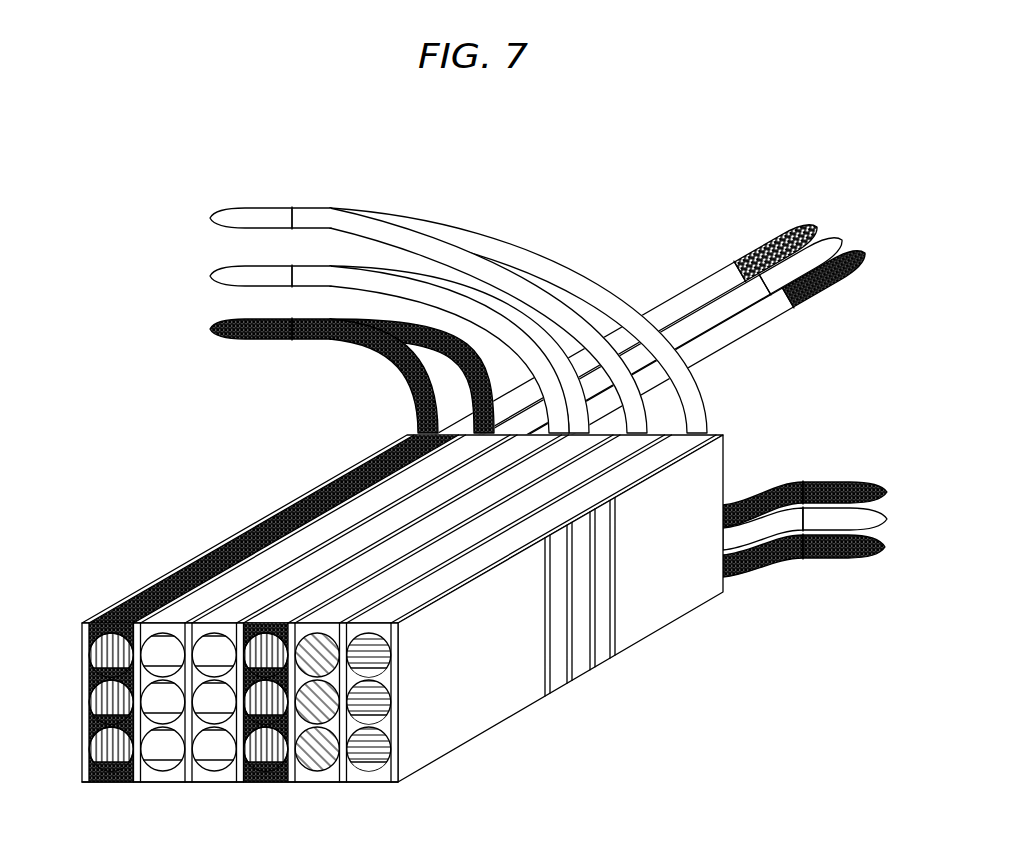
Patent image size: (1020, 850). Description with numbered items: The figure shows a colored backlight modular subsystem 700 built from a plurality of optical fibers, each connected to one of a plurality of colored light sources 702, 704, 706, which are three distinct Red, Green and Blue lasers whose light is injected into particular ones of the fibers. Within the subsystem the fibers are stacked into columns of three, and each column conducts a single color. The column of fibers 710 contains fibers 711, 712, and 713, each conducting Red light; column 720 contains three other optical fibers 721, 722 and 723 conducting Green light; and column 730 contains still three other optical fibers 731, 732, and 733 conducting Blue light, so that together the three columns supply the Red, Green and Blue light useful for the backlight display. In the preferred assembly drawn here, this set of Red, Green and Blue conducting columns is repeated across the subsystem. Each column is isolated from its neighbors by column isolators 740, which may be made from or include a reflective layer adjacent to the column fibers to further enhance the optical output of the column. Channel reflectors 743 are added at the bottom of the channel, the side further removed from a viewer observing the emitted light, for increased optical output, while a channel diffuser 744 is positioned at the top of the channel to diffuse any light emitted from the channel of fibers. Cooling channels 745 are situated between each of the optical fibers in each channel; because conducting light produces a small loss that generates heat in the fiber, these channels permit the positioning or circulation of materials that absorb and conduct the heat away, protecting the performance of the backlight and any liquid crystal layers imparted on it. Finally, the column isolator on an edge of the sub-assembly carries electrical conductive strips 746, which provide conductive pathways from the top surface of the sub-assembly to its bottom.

The modular subsystem 700 is at (375, 633).
The light source 702 is at (212, 218).
The light source 704 is at (212, 276).
The light source 706 is at (212, 329).
The column of fibers 710 is at (134, 786).
The column of fibers 720 is at (240, 733).
The column of fibers 730 is at (291, 733).
The optical fiber 711 is at (97, 749).
The optical fiber 712 is at (98, 701).
The optical fiber 713 is at (98, 654).
The optical fiber 721 is at (140, 786).
The optical fiber 722 is at (163, 702).
The optical fiber 723 is at (163, 655).
The optical fiber 731 is at (192, 786).
The optical fiber 732 is at (214, 702).
The optical fiber 733 is at (214, 655).
The column isolator 740 is at (203, 556).
The channel reflector 743 is at (398, 782).
The channel diffuser 744 is at (120, 610).
The cooling channel 745 is at (95, 726).
The electrical conductive strips 746 is at (578, 660).